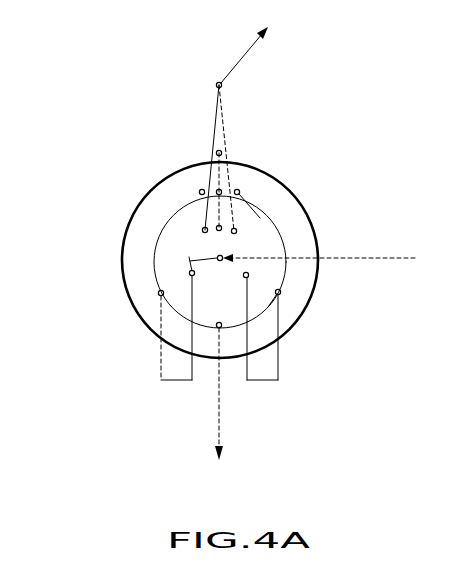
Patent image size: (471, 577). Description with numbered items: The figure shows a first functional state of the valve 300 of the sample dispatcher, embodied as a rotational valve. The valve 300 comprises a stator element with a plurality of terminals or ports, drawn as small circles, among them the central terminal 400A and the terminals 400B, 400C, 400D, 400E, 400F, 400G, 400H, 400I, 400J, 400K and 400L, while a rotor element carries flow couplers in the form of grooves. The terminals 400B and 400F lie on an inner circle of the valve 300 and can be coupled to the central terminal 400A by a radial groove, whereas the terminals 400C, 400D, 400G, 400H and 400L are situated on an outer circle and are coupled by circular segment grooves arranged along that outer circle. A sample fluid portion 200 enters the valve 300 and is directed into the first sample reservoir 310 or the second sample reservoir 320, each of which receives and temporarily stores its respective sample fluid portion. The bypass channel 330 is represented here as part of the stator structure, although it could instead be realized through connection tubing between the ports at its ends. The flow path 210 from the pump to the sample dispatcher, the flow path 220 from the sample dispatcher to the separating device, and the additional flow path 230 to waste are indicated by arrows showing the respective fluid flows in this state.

The sample fluid portion 200 is at (319, 247).
The flow path from the pump to the sample dispatcher 210 is at (217, 150).
The flow path from the sample dispatcher to the separating device 220 is at (265, 48).
The flow path to waste 230 is at (221, 410).
The valve 300 is at (122, 169).
The first sample reservoir 310 is at (260, 380).
The second sample reservoir 320 is at (172, 380).
The bypass channel 330 is at (237, 199).
The central terminal 400A is at (217, 258).
The terminal 400B is at (189, 273).
The terminal 400C is at (159, 293).
The terminal 400D is at (222, 325).
The terminal 400E is at (237, 231).
The terminal 400F is at (248, 274).
The terminal 400G is at (281, 292).
The terminal 400H is at (239, 191).
The terminal 400I is at (219, 82).
The terminal 400J is at (216, 153).
The terminal 400K is at (203, 231).
The terminal 400L is at (200, 192).